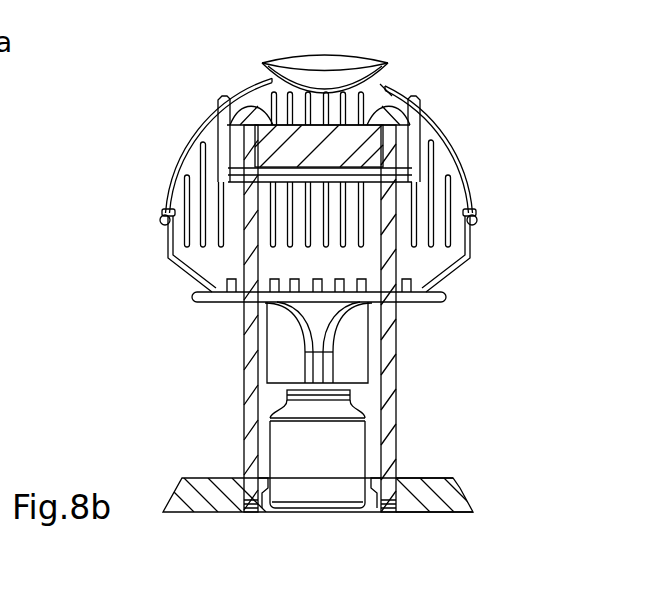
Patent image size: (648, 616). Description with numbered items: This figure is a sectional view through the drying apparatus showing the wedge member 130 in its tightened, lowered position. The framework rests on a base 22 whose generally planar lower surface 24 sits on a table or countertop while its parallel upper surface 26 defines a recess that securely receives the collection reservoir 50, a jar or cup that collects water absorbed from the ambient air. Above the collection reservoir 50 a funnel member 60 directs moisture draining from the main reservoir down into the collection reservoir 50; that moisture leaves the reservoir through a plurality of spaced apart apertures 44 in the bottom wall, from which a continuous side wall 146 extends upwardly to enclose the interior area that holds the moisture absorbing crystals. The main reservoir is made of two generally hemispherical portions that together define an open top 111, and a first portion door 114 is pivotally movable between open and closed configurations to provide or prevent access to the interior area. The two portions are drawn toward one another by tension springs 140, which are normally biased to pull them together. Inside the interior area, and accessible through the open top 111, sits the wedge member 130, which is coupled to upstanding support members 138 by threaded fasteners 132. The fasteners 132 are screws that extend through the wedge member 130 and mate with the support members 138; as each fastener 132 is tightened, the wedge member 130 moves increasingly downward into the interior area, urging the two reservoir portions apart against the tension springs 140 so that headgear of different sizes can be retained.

The base 22 is at (462, 490).
The lower surface 24 is at (435, 512).
The upper surface 26 is at (435, 478).
The aperture 44 is at (297, 279).
The collection reservoir 50 is at (290, 443).
The funnel member 60 is at (346, 332).
The open top 111 is at (383, 88).
The first portion door 114 is at (335, 62).
The wedge member 130 is at (272, 142).
The threaded fastener 132 is at (246, 135).
The support member 138 is at (250, 380).
The tension spring 140 is at (160, 220).
The dome housing 146 is at (390, 97).